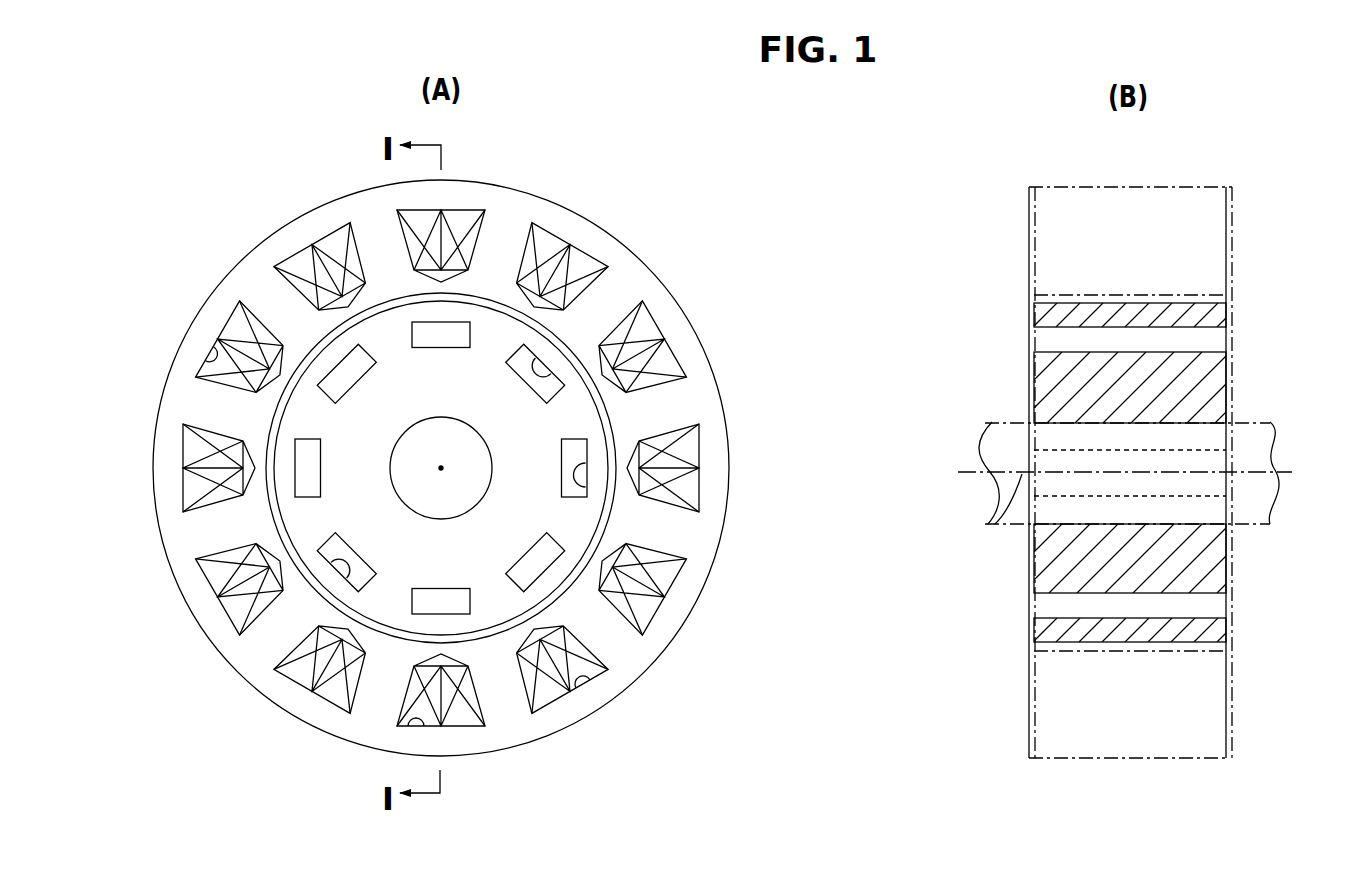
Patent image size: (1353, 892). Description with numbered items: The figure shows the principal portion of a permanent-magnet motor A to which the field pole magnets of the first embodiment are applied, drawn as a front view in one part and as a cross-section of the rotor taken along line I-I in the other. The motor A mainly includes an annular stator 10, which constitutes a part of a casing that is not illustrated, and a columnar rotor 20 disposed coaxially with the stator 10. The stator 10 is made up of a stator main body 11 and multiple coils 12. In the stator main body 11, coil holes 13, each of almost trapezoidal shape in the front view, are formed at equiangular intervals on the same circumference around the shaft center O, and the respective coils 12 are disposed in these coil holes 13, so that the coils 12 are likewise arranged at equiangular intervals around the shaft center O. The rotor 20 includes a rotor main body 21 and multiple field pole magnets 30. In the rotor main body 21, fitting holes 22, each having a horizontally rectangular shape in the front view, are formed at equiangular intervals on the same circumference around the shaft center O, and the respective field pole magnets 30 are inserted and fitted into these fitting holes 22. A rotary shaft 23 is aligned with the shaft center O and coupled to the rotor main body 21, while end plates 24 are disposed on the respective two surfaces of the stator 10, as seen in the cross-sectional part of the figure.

The stator 10 is at (628, 692).
The stator main body 11 is at (302, 237).
The coils 12 is at (237, 323).
The coil holes 13 is at (210, 352).
The rotor 20 is at (272, 425).
The rotor main body 21 is at (490, 327).
The fitting holes 22 is at (530, 353).
The rotary shaft 23 is at (430, 500).
The end plates 24 is at (1030, 678).
The field pole magnets 30 is at (543, 372).
The permanent-magnet motor A is at (253, 245).
The shaft center O is at (441, 468).